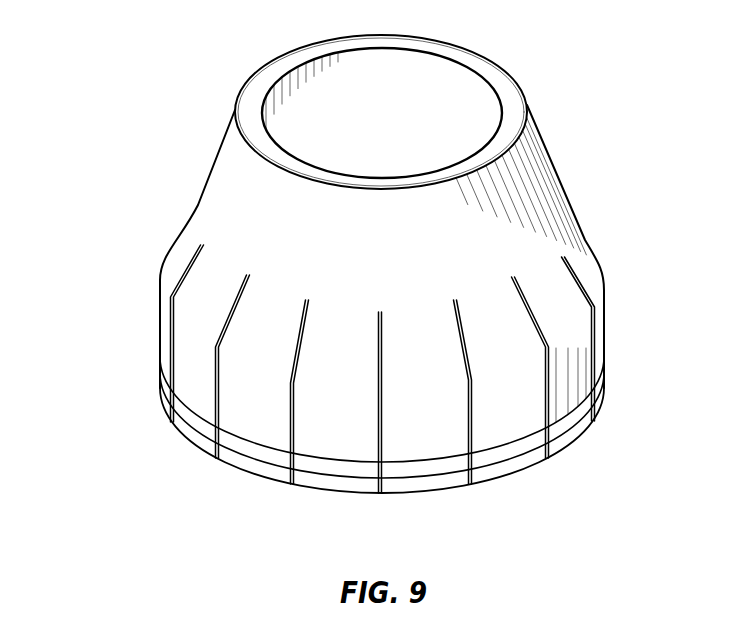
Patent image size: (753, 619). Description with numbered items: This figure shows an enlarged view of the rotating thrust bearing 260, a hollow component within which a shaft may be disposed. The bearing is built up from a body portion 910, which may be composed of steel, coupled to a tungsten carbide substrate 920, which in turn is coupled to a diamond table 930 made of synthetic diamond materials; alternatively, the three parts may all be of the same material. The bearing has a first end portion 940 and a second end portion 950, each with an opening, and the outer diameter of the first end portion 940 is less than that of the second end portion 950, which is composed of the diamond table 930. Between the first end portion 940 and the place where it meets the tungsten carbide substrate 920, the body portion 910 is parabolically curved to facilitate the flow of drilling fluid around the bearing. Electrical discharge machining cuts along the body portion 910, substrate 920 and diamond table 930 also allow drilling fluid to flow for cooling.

The rotating thrust bearing 260 is at (153, 38).
The body portion 910 is at (545, 203).
The tungsten carbide substrate 920 is at (575, 415).
The diamond table 930 is at (493, 482).
The first end portion 940 is at (503, 80).
The second end portion 950 is at (265, 490).